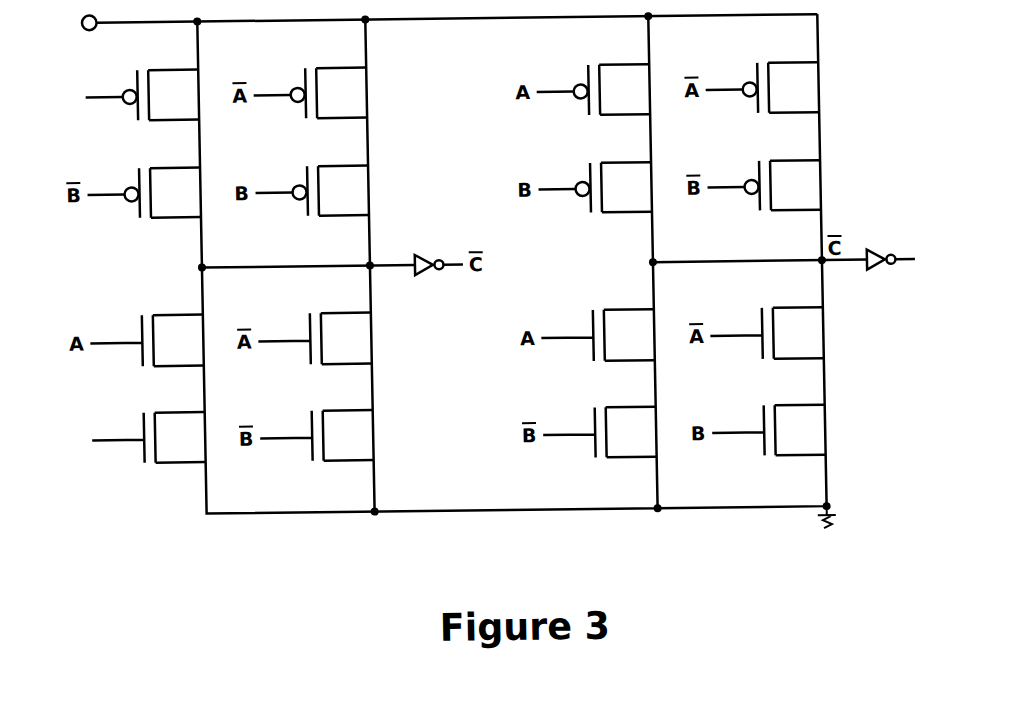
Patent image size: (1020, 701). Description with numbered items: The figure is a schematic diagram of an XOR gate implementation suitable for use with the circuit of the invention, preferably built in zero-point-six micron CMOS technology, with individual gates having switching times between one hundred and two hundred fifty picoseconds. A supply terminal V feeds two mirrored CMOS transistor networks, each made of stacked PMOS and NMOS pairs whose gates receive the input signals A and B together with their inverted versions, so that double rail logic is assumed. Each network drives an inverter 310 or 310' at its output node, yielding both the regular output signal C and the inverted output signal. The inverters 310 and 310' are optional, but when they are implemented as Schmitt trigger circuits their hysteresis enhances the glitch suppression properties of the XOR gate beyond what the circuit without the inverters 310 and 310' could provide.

The inverter 310 is at (447, 227).
The inverter 310' is at (901, 222).
The supply voltage terminal V is at (439, 18).
The input signal A is at (131, 96).
The input signal B is at (137, 438).
The output signal C is at (915, 259).